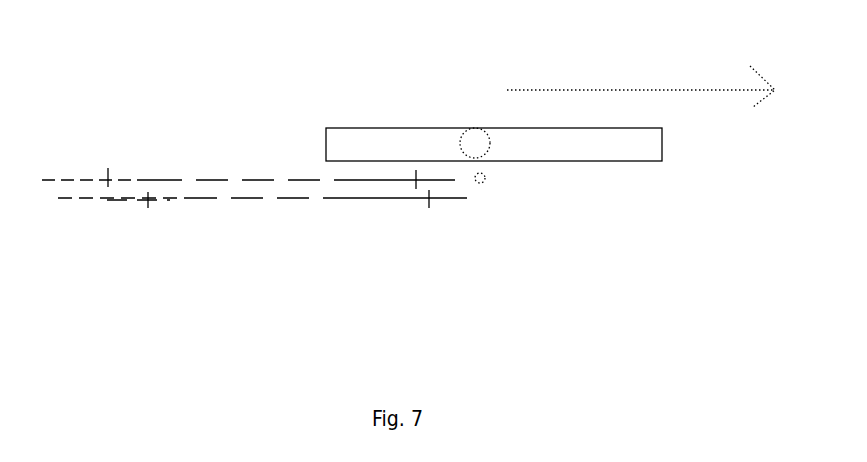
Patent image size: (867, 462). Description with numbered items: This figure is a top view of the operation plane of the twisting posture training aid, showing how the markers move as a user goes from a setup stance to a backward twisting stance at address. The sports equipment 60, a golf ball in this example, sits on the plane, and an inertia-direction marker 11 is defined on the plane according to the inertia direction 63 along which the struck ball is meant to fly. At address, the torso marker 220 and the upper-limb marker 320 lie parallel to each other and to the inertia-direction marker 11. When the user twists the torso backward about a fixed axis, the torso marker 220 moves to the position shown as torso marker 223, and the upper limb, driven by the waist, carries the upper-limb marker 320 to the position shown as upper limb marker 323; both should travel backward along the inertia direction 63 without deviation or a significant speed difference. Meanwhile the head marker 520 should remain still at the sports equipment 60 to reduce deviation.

The inertia-direction marker 11 is at (412, 140).
The inertia direction 63 is at (641, 74).
The sports equipment 60 is at (488, 153).
The head marker 520 is at (476, 183).
The upper limb marker 323 is at (73, 180).
The upper-limb marker 320 is at (368, 190).
The torso marker 223 is at (167, 201).
The torso marker 220 is at (405, 210).